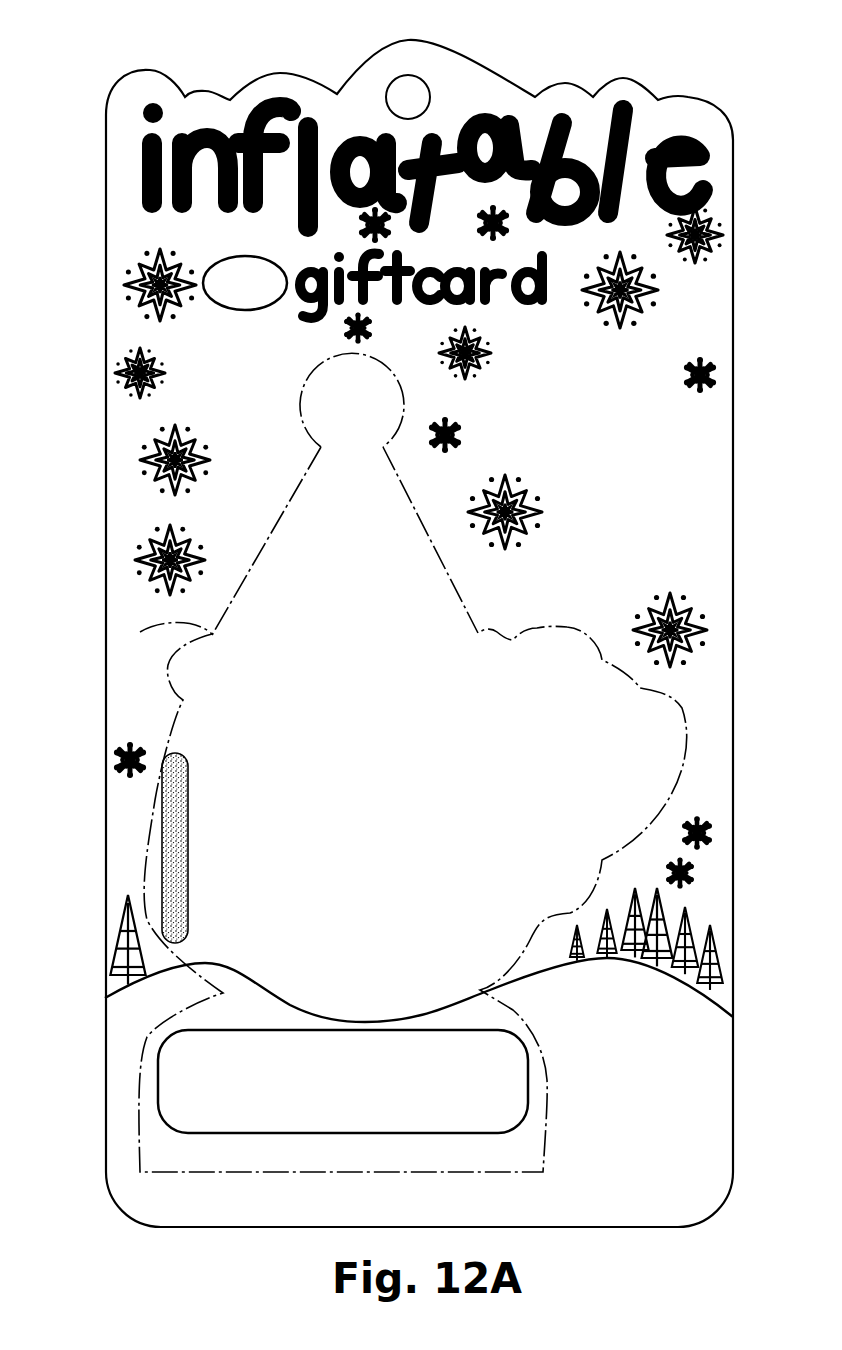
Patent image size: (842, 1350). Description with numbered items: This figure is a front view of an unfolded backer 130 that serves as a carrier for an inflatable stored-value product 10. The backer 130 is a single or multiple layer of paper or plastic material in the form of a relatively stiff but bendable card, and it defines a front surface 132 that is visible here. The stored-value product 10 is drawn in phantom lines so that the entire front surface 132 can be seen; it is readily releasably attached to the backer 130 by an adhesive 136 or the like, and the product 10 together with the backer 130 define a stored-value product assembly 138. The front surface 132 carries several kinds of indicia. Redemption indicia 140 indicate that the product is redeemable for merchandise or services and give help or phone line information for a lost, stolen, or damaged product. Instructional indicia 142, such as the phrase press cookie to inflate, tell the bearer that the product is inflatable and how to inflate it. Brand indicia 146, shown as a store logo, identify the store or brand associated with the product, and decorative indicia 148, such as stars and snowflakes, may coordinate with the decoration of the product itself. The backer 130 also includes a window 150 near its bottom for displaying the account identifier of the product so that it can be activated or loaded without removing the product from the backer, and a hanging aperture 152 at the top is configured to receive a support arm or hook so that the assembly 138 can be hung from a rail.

The stored-value product 10 is at (140, 632).
The backer 130 is at (736, 125).
The front surface 132 is at (705, 315).
The adhesive 136 is at (163, 849).
The stored-value product assembly 138 is at (710, 50).
The redemption indicia 140 is at (578, 774).
The instructional indicia 142 is at (697, 550).
The brand indicia 146 is at (224, 308).
The decorative indicia 148 is at (722, 208).
The window 150 is at (213, 1036).
The hanging aperture 152 is at (393, 113).